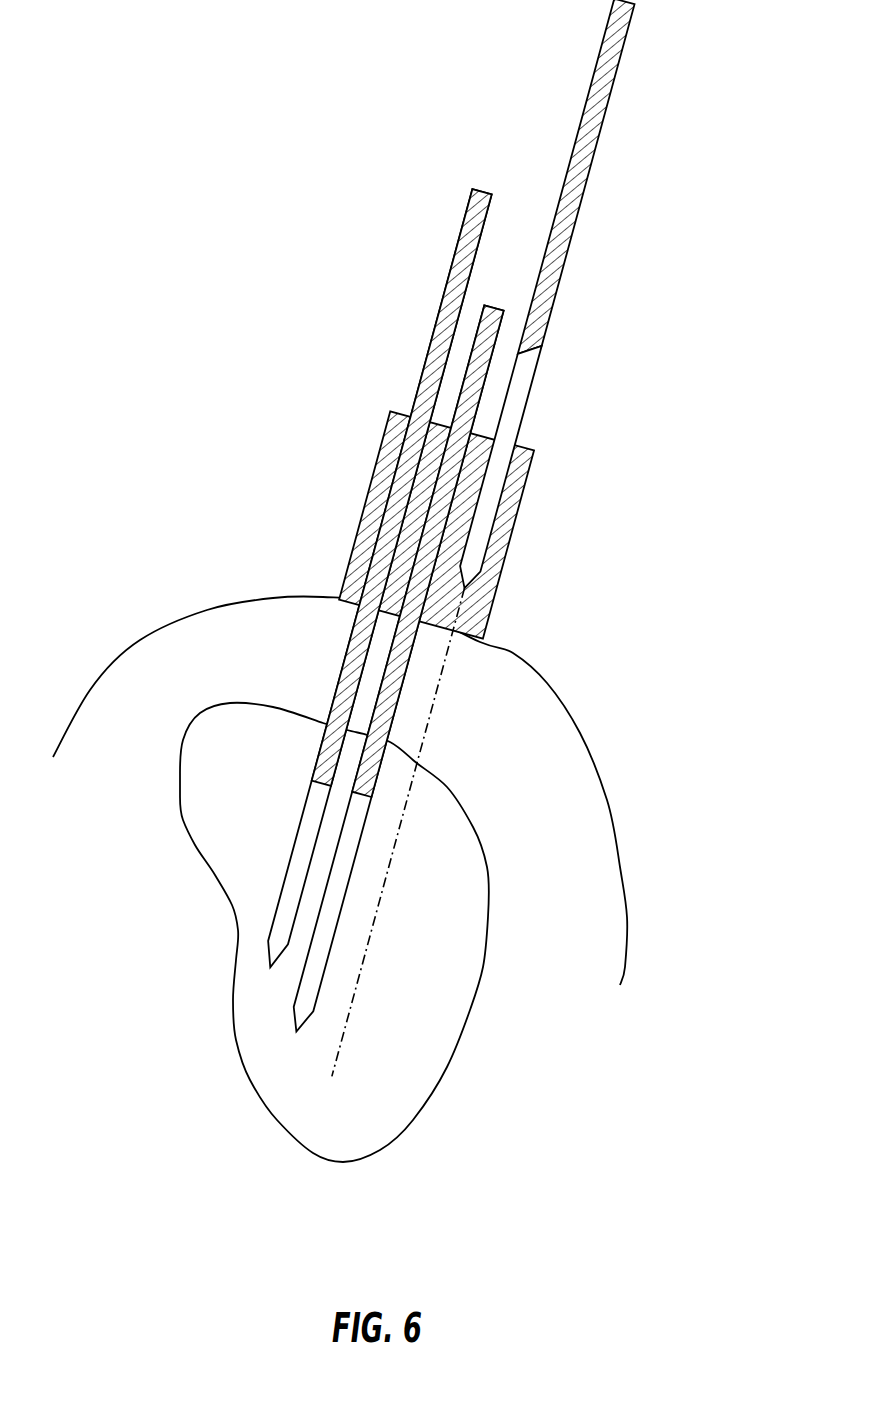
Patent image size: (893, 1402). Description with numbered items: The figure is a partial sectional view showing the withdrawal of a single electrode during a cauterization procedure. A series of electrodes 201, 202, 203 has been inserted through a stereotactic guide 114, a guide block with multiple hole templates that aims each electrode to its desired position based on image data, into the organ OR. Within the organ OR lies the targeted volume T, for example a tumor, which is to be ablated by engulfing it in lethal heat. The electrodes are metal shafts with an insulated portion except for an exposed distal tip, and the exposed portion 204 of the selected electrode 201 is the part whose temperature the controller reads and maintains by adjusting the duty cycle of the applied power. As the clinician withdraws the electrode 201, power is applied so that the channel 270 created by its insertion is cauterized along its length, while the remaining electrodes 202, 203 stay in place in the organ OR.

The electrode 201 is at (600, 127).
The electrode 202 is at (503, 312).
The electrode 203 is at (458, 255).
The exposed portion 204 is at (526, 368).
The stereotactic guide 114 is at (509, 549).
The channel 270 is at (367, 940).
The organ OR is at (610, 808).
The targeted volume T is at (180, 810).